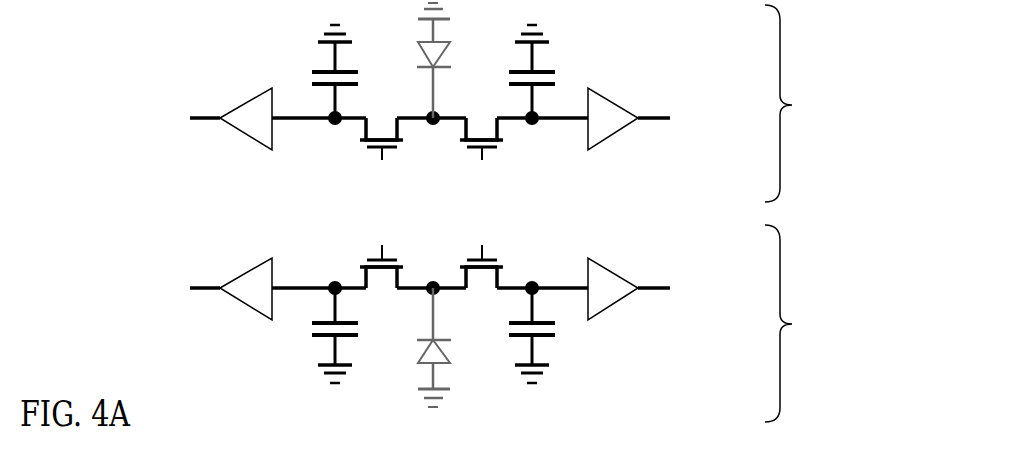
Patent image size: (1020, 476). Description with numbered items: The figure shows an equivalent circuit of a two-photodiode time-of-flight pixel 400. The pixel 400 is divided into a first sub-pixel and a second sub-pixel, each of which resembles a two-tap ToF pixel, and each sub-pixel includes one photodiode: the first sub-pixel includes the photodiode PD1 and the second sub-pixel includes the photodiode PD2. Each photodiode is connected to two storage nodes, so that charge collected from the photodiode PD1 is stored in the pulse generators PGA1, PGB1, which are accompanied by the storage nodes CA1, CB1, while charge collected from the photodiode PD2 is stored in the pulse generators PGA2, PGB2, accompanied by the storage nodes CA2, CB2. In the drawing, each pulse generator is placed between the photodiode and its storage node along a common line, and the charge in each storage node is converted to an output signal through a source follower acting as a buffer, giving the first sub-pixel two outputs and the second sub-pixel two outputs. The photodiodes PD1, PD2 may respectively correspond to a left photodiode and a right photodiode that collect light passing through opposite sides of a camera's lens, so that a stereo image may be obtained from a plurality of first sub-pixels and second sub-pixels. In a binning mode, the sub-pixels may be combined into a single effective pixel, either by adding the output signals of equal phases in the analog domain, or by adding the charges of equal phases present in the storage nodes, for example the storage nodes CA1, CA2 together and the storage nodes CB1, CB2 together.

The pixel 400 is at (68, 58).
The storage node CA1 is at (315, 71).
The storage node CB1 is at (557, 71).
The storage node CA2 is at (315, 335).
The storage node CB2 is at (557, 335).
The pulse generator PGA1 is at (378, 156).
The pulse generator PGB1 is at (482, 156).
The pulse generator PGA2 is at (378, 253).
The pulse generator PGB2 is at (482, 253).
The photodiode PD1 is at (455, 60).
The photodiode PD2 is at (457, 347).